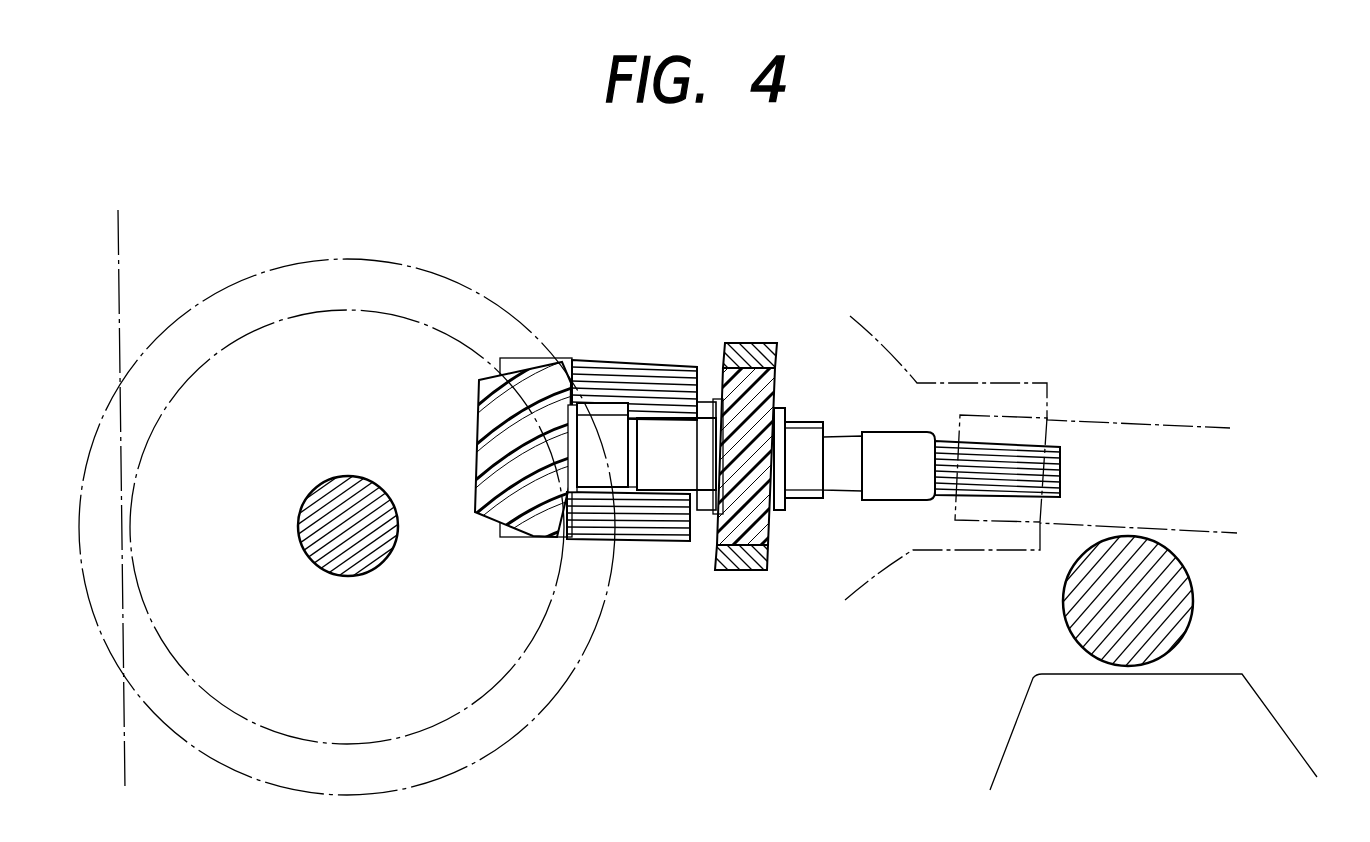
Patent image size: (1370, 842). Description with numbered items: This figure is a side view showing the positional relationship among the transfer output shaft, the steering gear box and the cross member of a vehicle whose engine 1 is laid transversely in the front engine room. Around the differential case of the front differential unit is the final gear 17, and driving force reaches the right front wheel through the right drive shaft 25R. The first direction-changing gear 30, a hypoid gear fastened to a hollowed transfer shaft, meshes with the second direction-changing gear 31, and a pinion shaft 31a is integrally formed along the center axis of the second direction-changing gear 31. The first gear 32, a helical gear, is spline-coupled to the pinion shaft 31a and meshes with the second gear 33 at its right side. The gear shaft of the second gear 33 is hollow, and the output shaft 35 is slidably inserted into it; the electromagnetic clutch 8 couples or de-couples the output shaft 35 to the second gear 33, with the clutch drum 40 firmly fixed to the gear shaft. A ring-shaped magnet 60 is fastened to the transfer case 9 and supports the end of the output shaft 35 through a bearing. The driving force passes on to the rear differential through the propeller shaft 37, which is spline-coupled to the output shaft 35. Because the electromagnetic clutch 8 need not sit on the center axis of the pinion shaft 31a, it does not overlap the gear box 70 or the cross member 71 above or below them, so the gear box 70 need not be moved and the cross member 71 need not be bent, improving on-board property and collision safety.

The engine 1 is at (120, 232).
The final gear 17 is at (336, 258).
The first direction-changing gear 30 is at (394, 312).
The right drive shaft 25R is at (368, 492).
The ring-shaped magnet 60 is at (542, 377).
The second direction-changing gear 31 is at (553, 366).
The pinion shaft 31a is at (665, 482).
The electromagnetic clutch 8 is at (626, 350).
The clutch drum 40 is at (676, 408).
The second gear 33 is at (750, 345).
The first gear 32 is at (775, 402).
The output shaft 35 is at (884, 438).
The transfer case 9 is at (1000, 385).
The propeller shaft 37 is at (1130, 423).
The gear box 70 is at (1177, 600).
The cross member 71 is at (1263, 703).